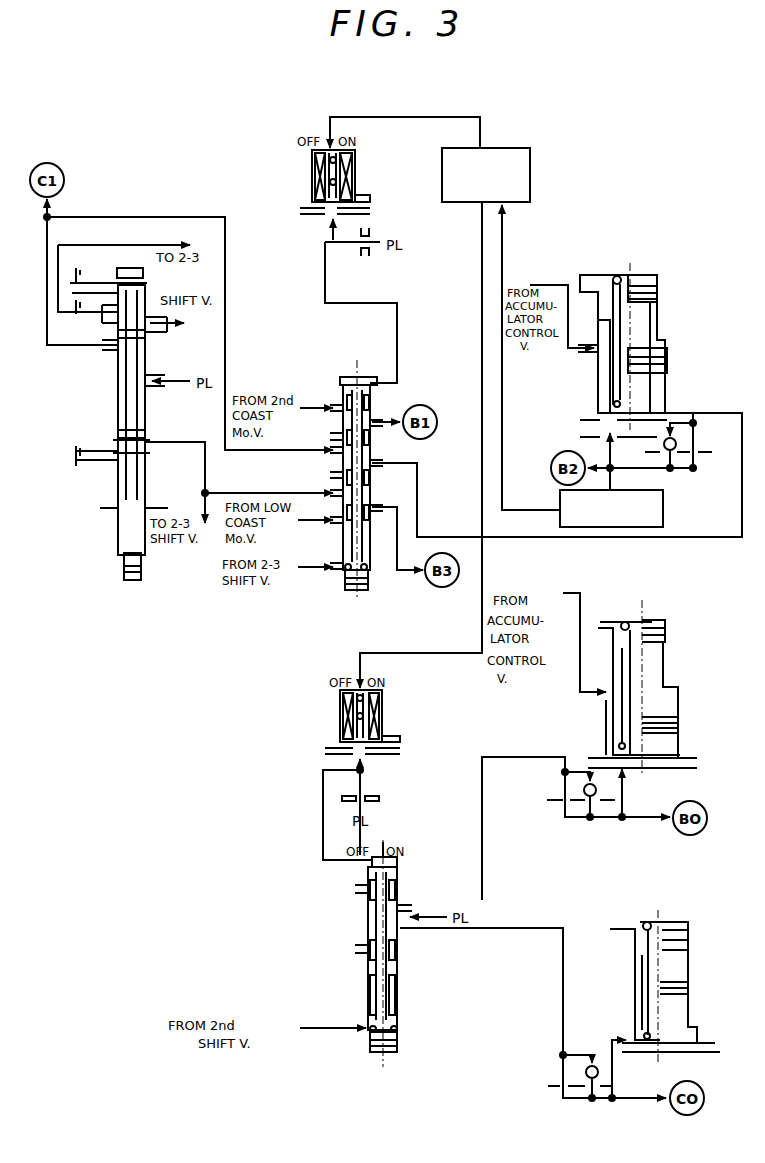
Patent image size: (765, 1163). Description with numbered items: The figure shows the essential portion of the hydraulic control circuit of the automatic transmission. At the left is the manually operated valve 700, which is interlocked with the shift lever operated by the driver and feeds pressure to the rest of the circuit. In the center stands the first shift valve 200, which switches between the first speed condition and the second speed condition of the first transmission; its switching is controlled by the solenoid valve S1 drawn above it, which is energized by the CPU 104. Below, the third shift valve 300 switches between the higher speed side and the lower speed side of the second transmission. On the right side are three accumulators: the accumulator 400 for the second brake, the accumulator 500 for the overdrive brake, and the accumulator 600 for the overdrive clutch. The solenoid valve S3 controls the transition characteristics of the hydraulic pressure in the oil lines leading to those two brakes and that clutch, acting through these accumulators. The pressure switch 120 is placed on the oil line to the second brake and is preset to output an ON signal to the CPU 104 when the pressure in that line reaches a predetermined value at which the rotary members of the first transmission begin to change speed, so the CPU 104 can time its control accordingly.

The CPU 104 is at (531, 188).
The pressure switch 120 is at (663, 517).
The first shift valve 200 is at (320, 584).
The third shift valve 300 is at (352, 1044).
The accumulator for B2 400 is at (652, 268).
The accumulator for B0 500 is at (630, 608).
The accumulator for C0 600 is at (633, 915).
The manually operated valve 700 is at (88, 488).
The solenoid valve S1 is at (357, 172).
The solenoid valve S3 is at (383, 716).